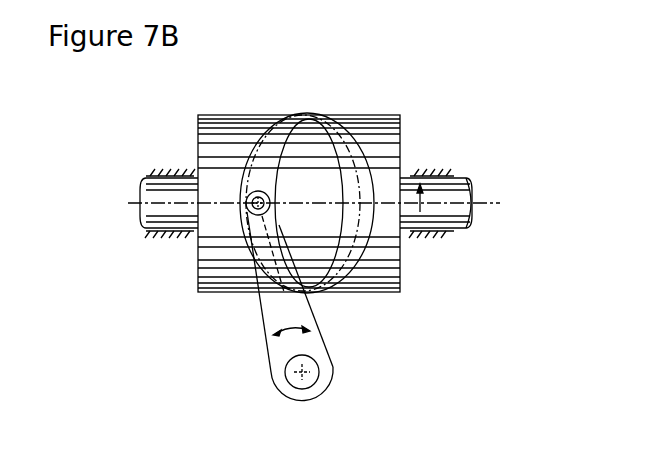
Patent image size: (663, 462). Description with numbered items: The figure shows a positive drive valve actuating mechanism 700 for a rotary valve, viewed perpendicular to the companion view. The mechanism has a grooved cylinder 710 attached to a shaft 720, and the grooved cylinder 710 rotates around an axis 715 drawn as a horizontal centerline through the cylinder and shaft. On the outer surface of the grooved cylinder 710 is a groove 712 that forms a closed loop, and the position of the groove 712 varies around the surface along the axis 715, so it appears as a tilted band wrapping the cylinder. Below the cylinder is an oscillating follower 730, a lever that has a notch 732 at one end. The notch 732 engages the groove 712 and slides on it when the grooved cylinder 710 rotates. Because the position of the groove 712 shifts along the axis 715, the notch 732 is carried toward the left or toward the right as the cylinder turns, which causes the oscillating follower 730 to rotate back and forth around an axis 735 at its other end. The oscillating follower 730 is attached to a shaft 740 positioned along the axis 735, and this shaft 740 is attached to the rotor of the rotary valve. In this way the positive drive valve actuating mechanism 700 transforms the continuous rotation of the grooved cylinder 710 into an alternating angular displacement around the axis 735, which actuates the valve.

The positive drive valve actuating mechanism 700 is at (174, 102).
The grooved cylinder 710 is at (342, 112).
The groove 712 is at (279, 124).
The axis 715 is at (482, 206).
The shaft 720 is at (460, 179).
The oscillating follower 730 is at (335, 348).
The notch 732 is at (246, 206).
The axis 735 is at (297, 372).
The shaft 740 is at (312, 387).